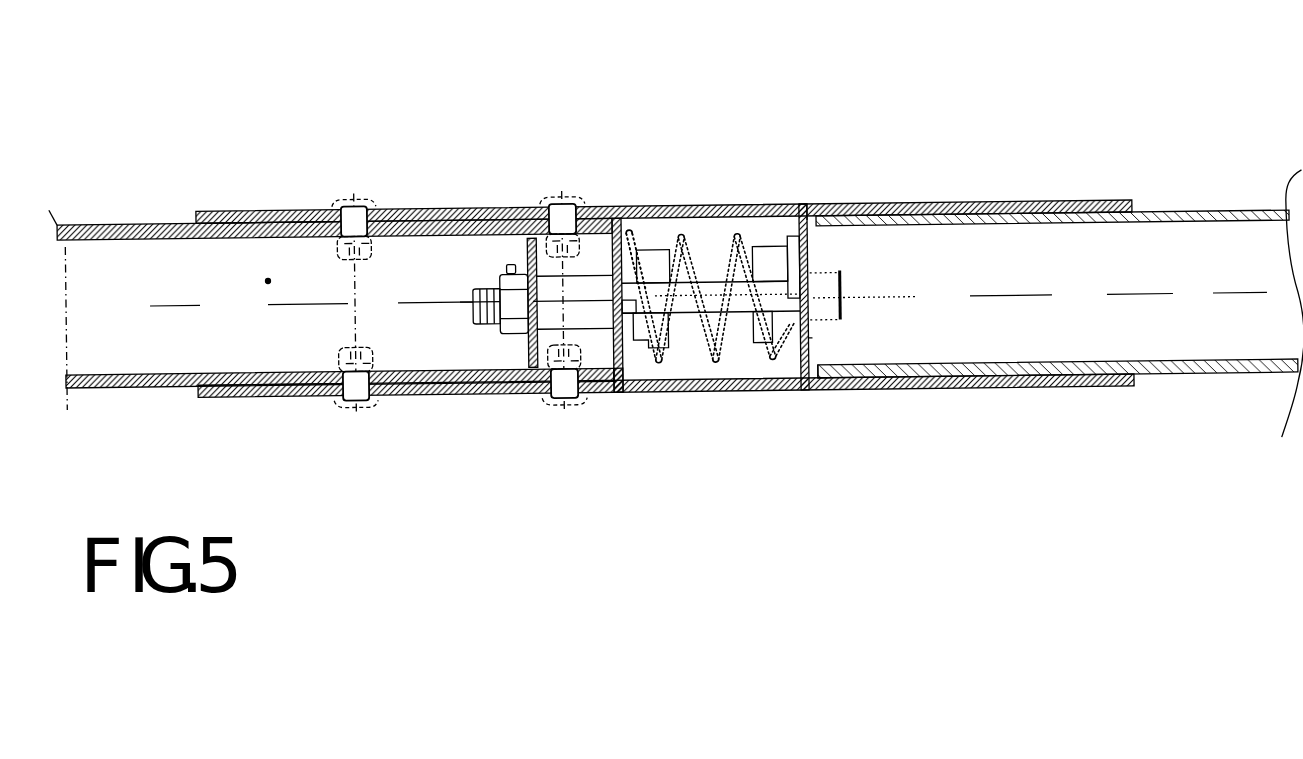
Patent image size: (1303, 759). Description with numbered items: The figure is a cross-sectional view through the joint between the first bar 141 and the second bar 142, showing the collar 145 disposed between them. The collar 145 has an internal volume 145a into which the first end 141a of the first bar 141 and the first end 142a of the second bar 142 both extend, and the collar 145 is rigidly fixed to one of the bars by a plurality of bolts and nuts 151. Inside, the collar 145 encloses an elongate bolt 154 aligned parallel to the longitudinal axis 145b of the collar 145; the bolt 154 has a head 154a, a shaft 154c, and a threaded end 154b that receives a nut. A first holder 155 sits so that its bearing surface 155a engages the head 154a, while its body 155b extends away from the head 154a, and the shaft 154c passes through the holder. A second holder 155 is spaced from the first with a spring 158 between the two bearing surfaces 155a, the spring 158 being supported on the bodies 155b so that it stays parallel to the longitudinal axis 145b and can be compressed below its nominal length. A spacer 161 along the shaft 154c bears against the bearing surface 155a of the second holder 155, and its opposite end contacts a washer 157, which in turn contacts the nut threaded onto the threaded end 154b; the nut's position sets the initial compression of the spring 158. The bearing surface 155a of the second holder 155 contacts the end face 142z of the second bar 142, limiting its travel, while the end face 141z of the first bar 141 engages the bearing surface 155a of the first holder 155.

The first bar 141 is at (1160, 207).
The first end of the first bar 141a is at (822, 383).
The end face of the first bar 141z is at (803, 220).
The second bar 142 is at (118, 226).
The first end of the second bar 142a is at (615, 340).
The end face of the second bar 142z is at (620, 385).
The collar 145 is at (663, 215).
The internal volume 145a is at (266, 278).
The longitudinal axis 145b is at (297, 302).
The bolts and nuts 151 is at (363, 202).
The elongate bolt 154 is at (718, 298).
The head 154a is at (841, 283).
The threaded end 154b is at (483, 325).
The shaft 154c is at (668, 303).
The holder 155 is at (812, 258).
The bearing surface 155a is at (603, 228).
The body 155b is at (641, 264).
The washer 157 is at (523, 345).
The spring 158 is at (705, 350).
The spacer 161 is at (585, 298).